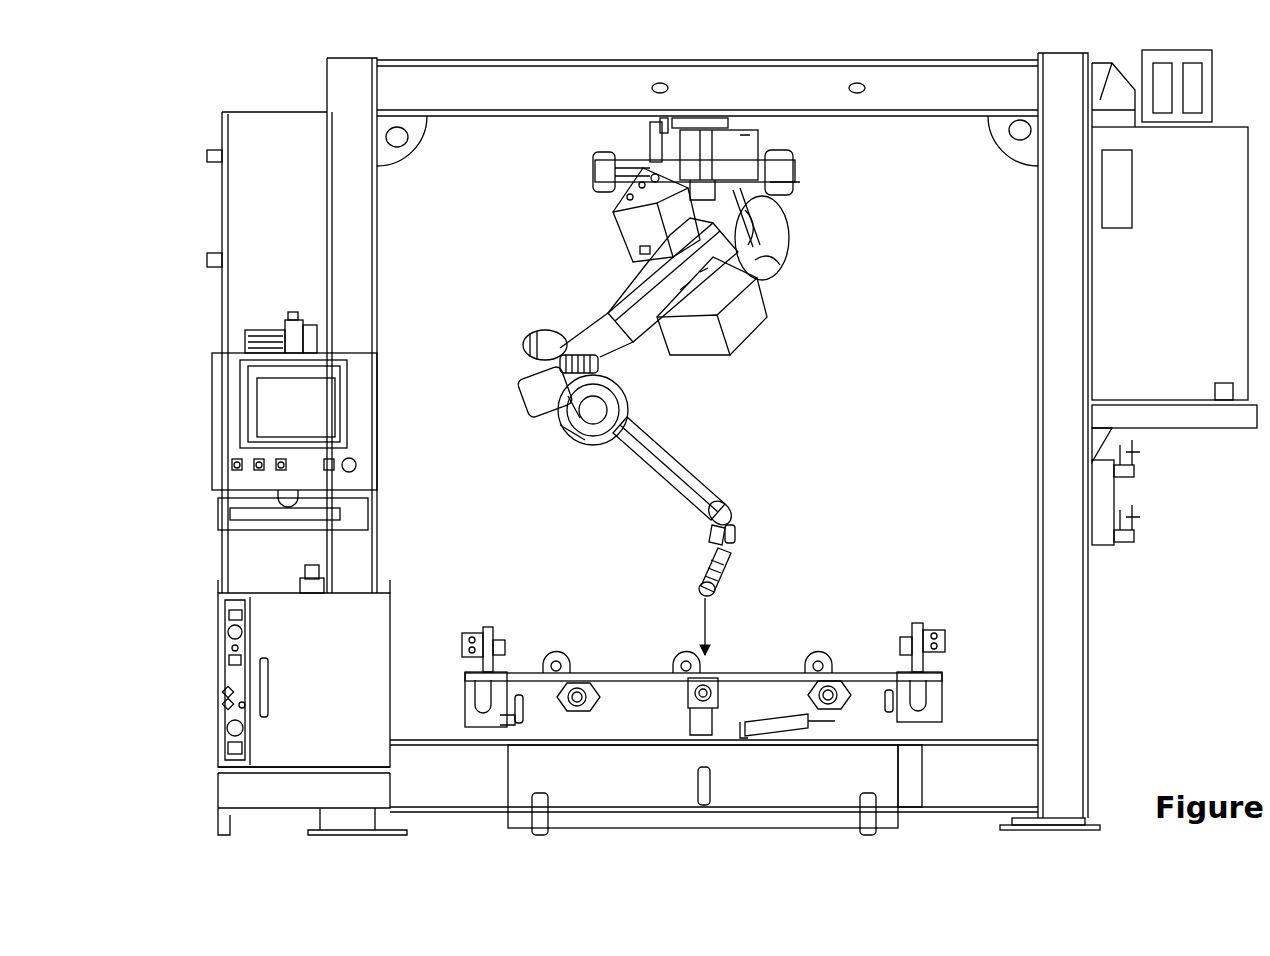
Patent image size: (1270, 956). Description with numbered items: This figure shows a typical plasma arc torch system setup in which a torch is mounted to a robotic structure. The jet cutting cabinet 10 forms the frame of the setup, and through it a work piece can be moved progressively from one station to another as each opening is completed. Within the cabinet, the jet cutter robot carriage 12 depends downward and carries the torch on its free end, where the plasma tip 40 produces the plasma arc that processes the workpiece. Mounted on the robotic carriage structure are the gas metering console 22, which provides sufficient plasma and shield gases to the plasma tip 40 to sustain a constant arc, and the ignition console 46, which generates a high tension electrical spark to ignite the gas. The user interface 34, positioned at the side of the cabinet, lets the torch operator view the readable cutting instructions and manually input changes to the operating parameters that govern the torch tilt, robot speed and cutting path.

The jet cutting cabinet 10 is at (1093, 617).
The jet cutter robot carriage 12 is at (677, 462).
The gas metering console 22 is at (290, 657).
The user interface 34 is at (292, 410).
The plasma tip 40 is at (720, 588).
The ignition console 46 is at (618, 236).